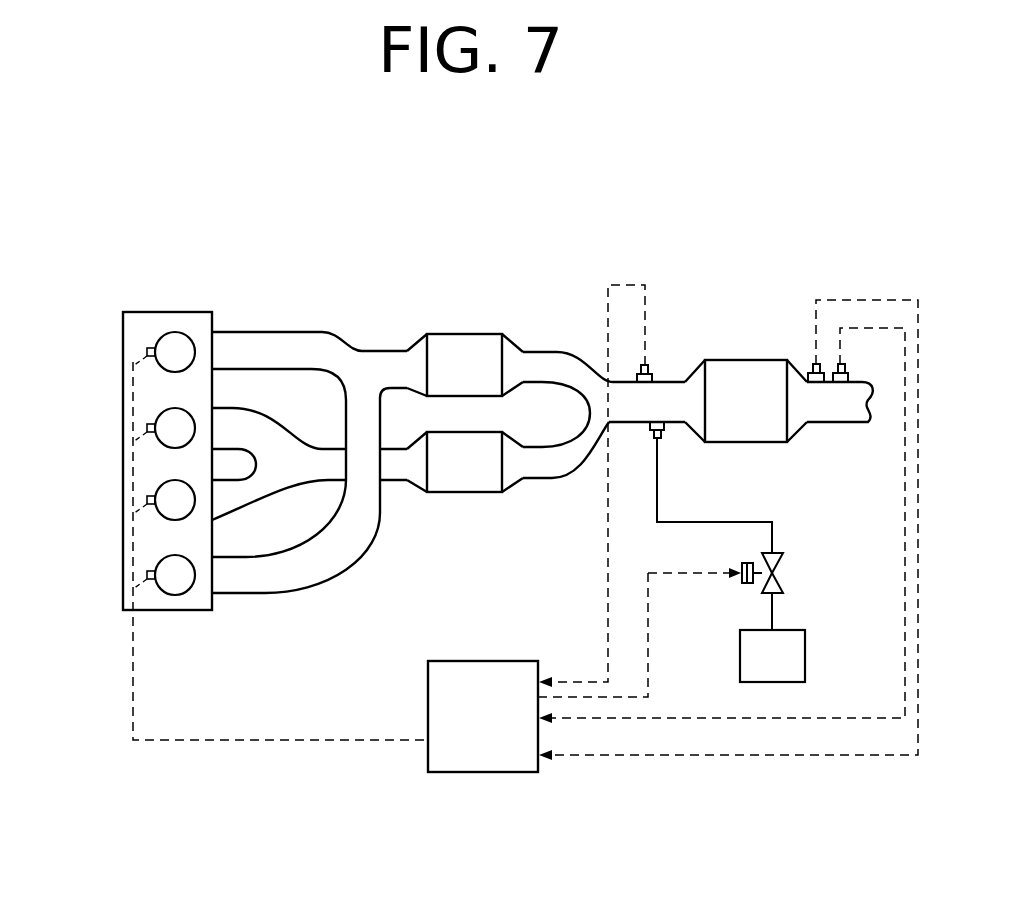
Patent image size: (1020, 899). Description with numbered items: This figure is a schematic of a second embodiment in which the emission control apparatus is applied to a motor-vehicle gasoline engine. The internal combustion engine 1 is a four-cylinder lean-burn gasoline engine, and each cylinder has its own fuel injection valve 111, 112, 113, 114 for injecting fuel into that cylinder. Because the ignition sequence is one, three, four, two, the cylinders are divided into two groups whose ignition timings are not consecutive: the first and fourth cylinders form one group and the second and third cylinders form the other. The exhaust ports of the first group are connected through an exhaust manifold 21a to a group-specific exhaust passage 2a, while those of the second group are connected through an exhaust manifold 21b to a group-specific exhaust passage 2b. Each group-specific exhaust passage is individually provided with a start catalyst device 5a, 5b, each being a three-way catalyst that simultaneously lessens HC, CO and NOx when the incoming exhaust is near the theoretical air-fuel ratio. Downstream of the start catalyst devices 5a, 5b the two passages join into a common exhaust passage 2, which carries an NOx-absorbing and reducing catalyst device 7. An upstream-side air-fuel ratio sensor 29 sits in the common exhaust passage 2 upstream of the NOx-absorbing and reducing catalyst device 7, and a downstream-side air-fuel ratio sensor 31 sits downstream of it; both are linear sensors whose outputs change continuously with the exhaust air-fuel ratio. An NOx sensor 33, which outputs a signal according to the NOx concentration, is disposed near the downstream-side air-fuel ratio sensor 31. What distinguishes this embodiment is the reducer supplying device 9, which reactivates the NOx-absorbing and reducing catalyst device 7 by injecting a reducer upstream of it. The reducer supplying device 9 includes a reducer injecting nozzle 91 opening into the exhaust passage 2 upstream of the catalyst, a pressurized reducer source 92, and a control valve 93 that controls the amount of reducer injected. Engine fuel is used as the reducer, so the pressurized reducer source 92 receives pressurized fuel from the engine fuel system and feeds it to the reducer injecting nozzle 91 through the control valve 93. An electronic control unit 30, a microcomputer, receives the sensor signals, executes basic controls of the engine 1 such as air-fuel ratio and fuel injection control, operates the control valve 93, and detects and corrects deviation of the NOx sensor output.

The internal combustion engine 1 is at (161, 304).
The fuel injection valve 111 is at (147, 352).
The fuel injection valve 112 is at (147, 428).
The fuel injection valve 113 is at (147, 500).
The fuel injection valve 114 is at (147, 575).
The exhaust manifold 21a is at (278, 346).
The exhaust manifold 21b is at (277, 436).
The start catalyst device 5a is at (472, 342).
The start catalyst device 5b is at (468, 483).
The group-specific exhaust passage 2a is at (555, 348).
The group-specific exhaust passage 2b is at (553, 470).
The common exhaust passage 2 is at (677, 391).
The upstream-side air-fuel ratio sensor 29 is at (658, 380).
The NOx-absorbing and reducing catalyst device 7 is at (748, 361).
The NOx sensor 33 is at (811, 371).
The downstream-side air-fuel ratio sensor 31 is at (873, 368).
The reducer injecting nozzle 91 is at (665, 432).
The reducer supplying device 9 is at (795, 510).
The control valve 93 is at (762, 590).
The pressurized reducer source 92 is at (805, 662).
The electronic control unit 30 is at (485, 773).